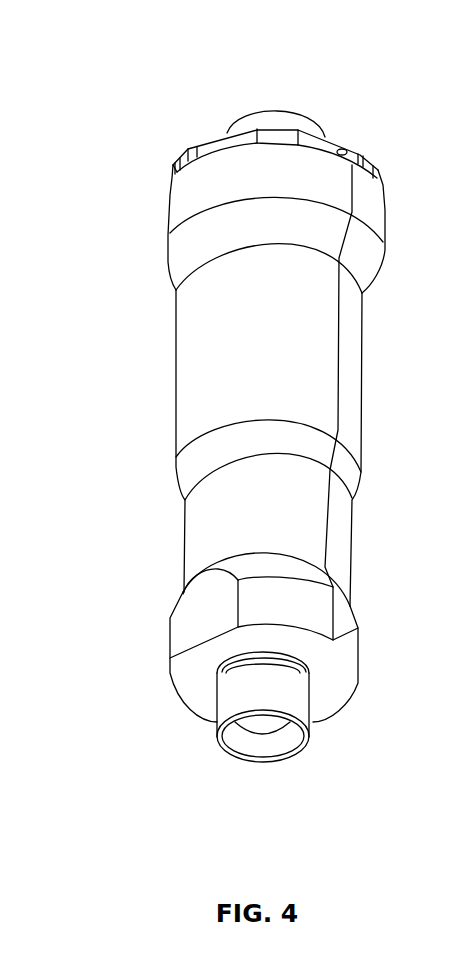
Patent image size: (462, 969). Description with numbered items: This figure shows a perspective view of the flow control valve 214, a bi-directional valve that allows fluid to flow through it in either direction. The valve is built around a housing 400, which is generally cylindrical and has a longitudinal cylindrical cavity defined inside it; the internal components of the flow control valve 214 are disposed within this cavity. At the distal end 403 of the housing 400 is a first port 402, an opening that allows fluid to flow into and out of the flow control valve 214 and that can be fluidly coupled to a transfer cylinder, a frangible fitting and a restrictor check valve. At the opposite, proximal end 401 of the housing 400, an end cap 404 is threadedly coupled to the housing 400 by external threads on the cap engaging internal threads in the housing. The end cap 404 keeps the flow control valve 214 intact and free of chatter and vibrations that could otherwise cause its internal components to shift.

The flow control valve 214 is at (171, 123).
The housing 400 is at (362, 298).
The proximal end 401 is at (254, 37).
The first port 402 is at (267, 748).
The distal end 403 is at (251, 877).
The end cap 404 is at (245, 127).